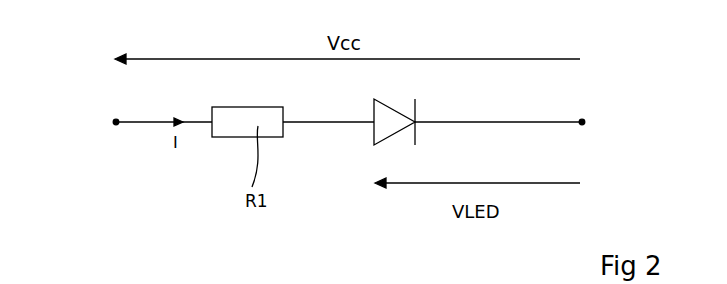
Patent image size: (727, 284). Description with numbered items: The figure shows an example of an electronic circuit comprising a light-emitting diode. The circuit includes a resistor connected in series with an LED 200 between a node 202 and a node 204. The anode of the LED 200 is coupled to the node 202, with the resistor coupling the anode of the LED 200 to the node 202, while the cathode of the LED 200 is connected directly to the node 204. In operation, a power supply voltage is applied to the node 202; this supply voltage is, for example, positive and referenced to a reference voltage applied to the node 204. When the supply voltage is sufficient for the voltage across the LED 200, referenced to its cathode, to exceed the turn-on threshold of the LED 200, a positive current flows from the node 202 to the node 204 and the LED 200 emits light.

The LED 200 is at (420, 105).
The node 202 is at (114, 127).
The node 204 is at (585, 119).